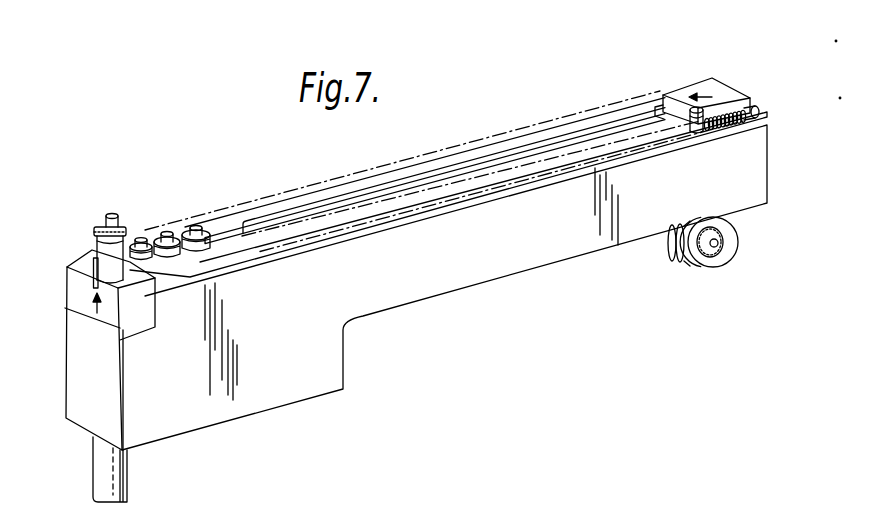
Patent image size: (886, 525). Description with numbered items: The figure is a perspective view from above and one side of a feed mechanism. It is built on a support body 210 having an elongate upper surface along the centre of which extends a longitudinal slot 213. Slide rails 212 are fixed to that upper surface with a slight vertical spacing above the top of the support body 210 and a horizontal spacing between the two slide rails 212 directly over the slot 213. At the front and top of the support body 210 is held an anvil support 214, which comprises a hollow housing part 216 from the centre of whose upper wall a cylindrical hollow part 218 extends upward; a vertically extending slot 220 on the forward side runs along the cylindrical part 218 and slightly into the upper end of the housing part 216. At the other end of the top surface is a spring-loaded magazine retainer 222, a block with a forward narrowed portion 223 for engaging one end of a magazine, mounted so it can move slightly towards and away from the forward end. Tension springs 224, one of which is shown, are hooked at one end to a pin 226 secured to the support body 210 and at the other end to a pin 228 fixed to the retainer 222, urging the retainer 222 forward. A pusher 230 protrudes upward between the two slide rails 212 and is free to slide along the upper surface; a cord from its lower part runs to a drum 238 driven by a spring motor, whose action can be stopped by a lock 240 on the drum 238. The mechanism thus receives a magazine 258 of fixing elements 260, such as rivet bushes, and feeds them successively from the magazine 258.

The support body 210 is at (296, 382).
The slide rails 212 is at (388, 216).
The longitudinal slot 213 is at (452, 178).
The anvil support 214 is at (103, 320).
The hollow housing part 216 is at (140, 320).
The cylindrical hollow part 218 is at (98, 229).
The vertically extending slot 220 is at (68, 265).
The spring-loaded magazine retainer 222 is at (692, 90).
The forward narrowed portion 223 is at (656, 108).
The tension springs 224 is at (742, 117).
The pin 226 is at (702, 112).
The pin 228 is at (752, 112).
The pusher 230 is at (244, 222).
The drum 238 is at (668, 252).
The lock 240 is at (715, 247).
The magazine 258 is at (566, 118).
The fixing elements 260 is at (172, 232).